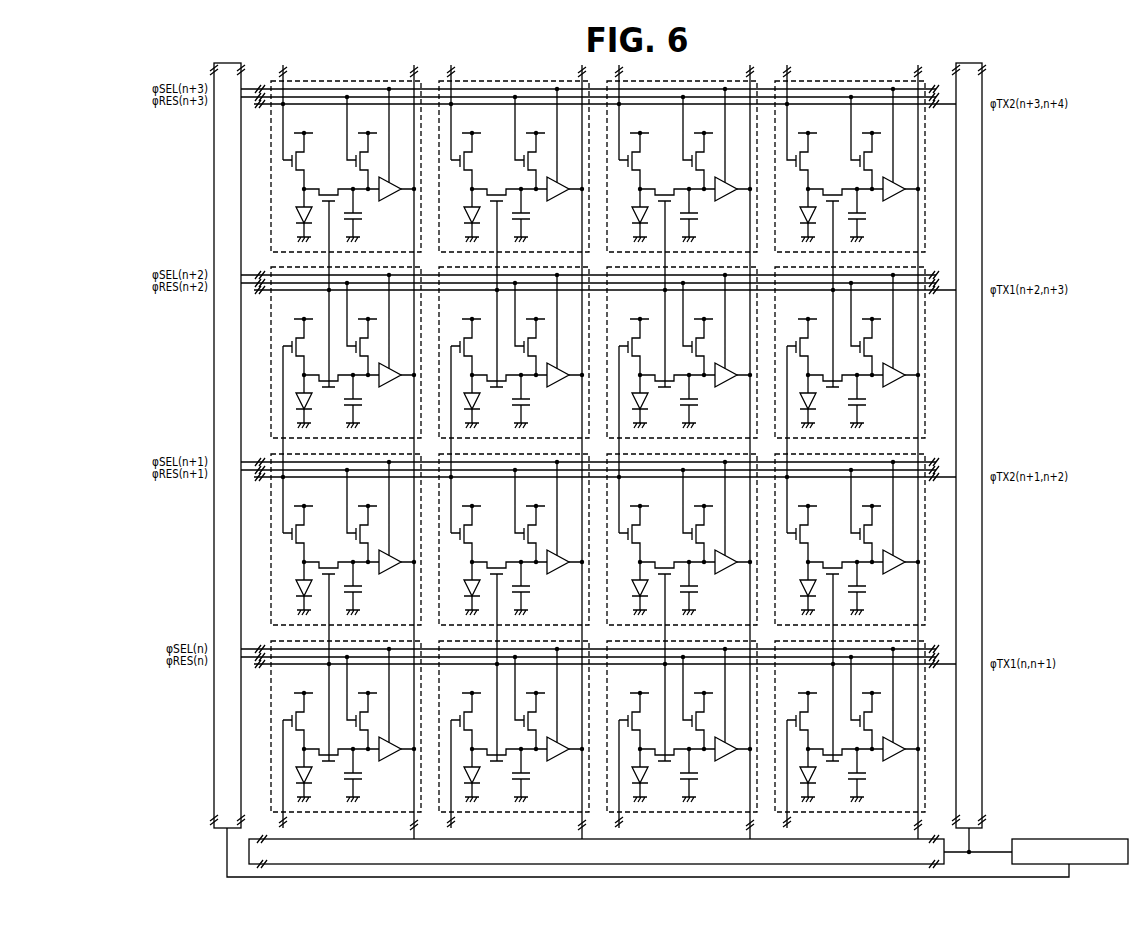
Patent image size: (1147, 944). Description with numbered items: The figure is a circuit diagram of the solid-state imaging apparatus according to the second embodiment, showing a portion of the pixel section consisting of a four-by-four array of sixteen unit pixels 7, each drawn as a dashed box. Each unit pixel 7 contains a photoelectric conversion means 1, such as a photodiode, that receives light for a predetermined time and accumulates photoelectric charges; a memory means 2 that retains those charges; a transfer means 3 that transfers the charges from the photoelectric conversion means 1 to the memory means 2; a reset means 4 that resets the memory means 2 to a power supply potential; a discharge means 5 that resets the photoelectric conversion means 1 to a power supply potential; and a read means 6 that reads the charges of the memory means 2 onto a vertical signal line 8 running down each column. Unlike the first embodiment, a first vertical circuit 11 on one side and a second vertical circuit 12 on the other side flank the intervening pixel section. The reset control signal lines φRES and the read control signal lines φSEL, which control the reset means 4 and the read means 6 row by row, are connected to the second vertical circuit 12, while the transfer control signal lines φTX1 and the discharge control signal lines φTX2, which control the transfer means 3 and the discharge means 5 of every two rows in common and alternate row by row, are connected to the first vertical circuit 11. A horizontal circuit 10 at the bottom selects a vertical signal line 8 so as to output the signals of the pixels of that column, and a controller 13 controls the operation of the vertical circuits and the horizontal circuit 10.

The photoelectric conversion means 1 is at (800, 215).
The memory means 2 is at (867, 216).
The transfer means 3 is at (835, 189).
The reset means 4 is at (867, 162).
The discharge means 5 is at (798, 176).
The read means 6 is at (900, 181).
The unit pixel 7 is at (862, 80).
The vertical signal line 8 is at (918, 240).
The horizontal circuit 10 is at (820, 838).
The first vertical circuit 11 is at (982, 733).
The second vertical circuit 12 is at (214, 752).
The controller 13 is at (1085, 839).